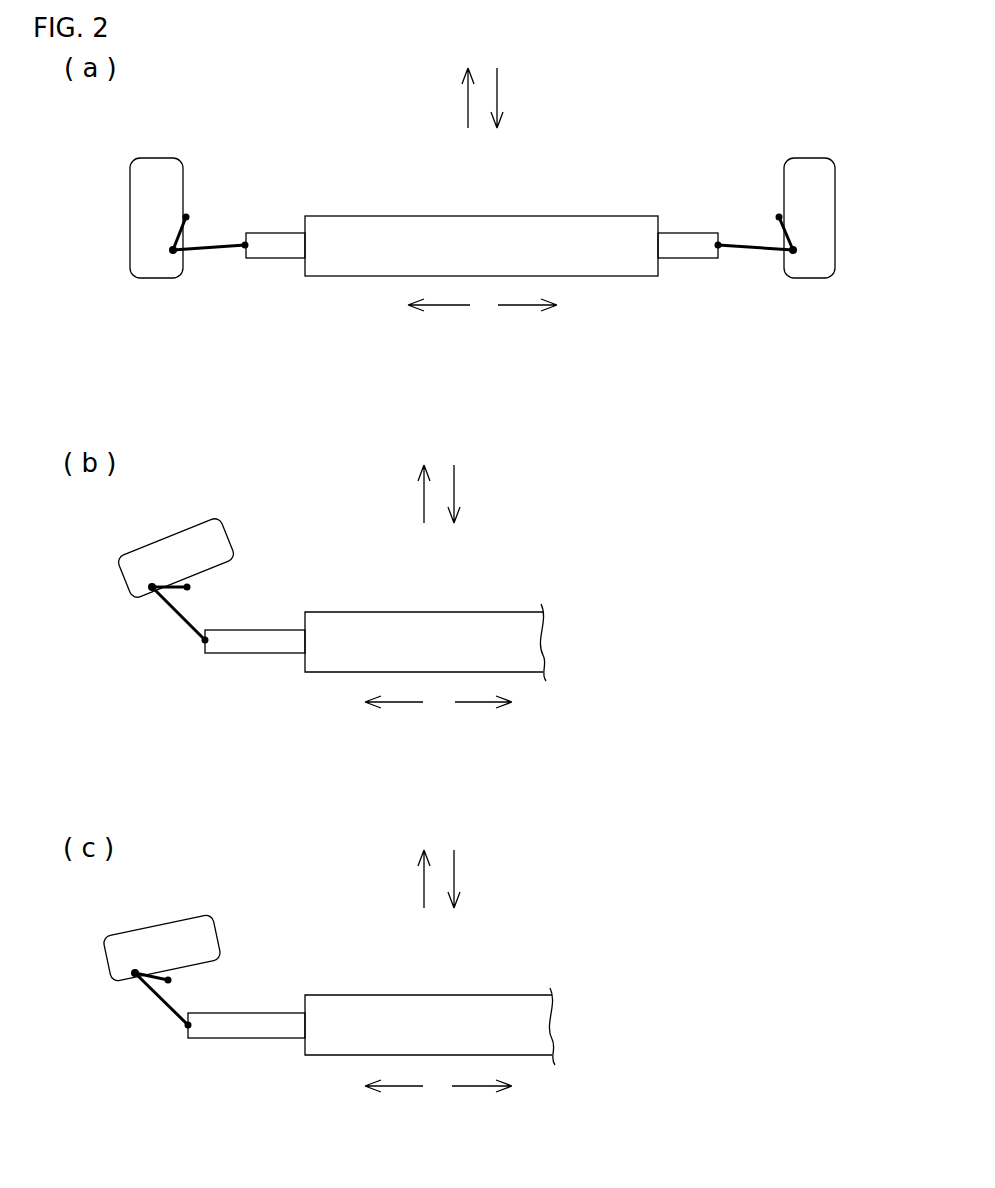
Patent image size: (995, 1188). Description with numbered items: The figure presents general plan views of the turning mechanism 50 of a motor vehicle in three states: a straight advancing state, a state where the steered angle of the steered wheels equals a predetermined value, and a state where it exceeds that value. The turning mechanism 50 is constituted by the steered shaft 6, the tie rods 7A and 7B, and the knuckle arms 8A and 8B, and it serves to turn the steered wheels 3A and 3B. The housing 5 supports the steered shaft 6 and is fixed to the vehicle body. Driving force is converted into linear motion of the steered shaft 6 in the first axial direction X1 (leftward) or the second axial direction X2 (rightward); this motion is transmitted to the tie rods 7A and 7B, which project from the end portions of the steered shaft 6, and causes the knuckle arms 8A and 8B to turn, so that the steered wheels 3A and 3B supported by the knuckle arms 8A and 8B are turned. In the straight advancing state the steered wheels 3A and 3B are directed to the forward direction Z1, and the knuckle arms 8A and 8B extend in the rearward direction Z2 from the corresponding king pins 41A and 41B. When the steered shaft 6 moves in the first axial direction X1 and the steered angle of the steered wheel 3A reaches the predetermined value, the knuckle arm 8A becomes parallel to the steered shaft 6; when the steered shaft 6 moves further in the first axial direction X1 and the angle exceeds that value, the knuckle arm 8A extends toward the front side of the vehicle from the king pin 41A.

The turning mechanism 50 is at (545, 203).
The housing 5 is at (438, 230).
The steered shaft 6 is at (279, 250).
The tie rod 7A is at (209, 253).
The tie rod 7B is at (756, 252).
The steered wheel 3A is at (157, 165).
The steered wheel 3B is at (808, 165).
The knuckle arm 8A is at (178, 235).
The knuckle arm 8B is at (790, 236).
The king pin 41A is at (191, 215).
The king pin 41B is at (776, 215).
The forward direction Z1 is at (466, 107).
The rearward direction Z2 is at (499, 80).
The first axial direction X1 is at (445, 307).
The second axial direction X2 is at (519, 307).